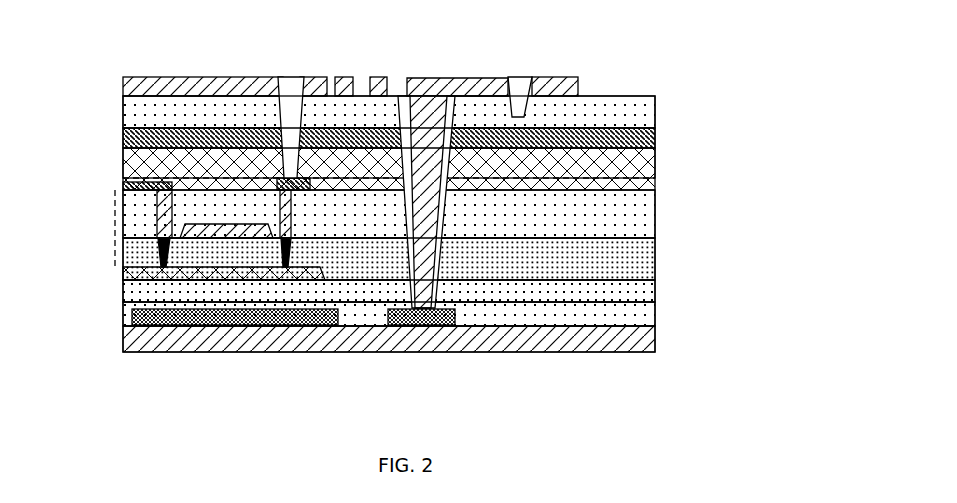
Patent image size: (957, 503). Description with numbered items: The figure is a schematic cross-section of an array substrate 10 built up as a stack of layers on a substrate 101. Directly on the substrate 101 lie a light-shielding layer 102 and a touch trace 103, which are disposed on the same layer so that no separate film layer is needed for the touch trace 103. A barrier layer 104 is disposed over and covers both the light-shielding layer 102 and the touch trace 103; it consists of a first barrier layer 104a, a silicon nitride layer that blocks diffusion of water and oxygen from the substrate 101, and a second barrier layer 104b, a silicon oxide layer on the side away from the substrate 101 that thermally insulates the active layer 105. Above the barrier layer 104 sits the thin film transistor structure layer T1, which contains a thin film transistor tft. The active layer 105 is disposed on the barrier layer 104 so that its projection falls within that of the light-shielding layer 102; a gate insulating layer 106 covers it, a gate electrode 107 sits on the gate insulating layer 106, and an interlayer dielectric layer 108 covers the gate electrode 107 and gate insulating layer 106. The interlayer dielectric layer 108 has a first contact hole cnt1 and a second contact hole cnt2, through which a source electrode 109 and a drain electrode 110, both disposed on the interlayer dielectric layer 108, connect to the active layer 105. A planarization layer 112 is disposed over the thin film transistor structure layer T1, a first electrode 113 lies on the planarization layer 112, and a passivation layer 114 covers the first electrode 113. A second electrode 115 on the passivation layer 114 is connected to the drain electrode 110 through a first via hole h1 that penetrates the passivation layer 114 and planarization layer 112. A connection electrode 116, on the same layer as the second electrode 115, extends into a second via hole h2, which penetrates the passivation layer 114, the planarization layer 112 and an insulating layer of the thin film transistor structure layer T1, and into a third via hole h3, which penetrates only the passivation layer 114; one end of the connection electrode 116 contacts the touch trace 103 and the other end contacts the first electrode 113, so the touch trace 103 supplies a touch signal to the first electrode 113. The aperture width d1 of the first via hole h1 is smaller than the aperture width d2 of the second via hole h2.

The array substrate 10 is at (647, 55).
The substrate 101 is at (655, 337).
The light-shielding layer 102 is at (227, 318).
The touch trace 103 is at (407, 310).
The barrier layer 104 is at (463, 306).
The first barrier layer 104a is at (655, 313).
The second barrier layer 104b is at (655, 290).
The active layer 105 is at (165, 275).
The gate insulating layer 106 is at (655, 257).
The gate electrode 107 is at (162, 231).
The interlayer dielectric layer 108 is at (655, 220).
The source electrode 109 is at (168, 185).
The drain electrode 110 is at (258, 184).
The planarization layer 112 is at (655, 178).
The first electrode 113 is at (655, 136).
The passivation layer 114 is at (655, 103).
The second electrode 115 is at (213, 76).
The connection electrode 116 is at (503, 79).
The first contact hole cnt1 is at (165, 268).
The second contact hole cnt2 is at (287, 268).
The first via hole h1 is at (300, 180).
The second via hole h2 is at (420, 274).
The third via hole h3 is at (530, 113).
The width of aperture of first via hole d1 is at (310, 65).
The width of aperture of second via hole d2 is at (456, 65).
The thin film transistor tft is at (62, 143).
The thin film transistor structure layer T1 is at (115, 276).